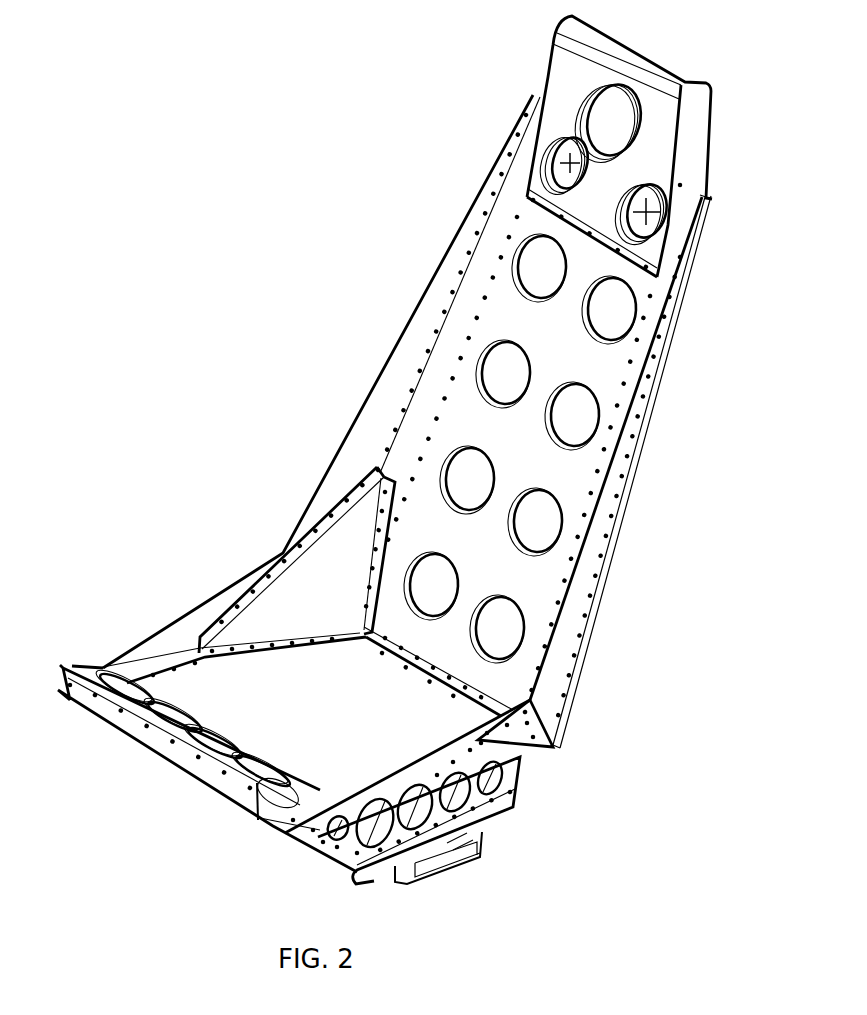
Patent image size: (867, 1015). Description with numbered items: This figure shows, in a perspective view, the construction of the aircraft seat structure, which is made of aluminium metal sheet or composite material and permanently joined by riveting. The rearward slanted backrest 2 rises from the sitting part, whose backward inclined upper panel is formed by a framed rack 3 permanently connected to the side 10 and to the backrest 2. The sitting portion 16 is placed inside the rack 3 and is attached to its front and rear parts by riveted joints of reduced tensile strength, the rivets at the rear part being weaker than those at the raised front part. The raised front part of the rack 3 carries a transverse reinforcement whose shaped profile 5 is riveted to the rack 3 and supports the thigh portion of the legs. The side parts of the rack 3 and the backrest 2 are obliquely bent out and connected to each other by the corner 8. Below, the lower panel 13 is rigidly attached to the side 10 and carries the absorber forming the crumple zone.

The backrest 2 is at (546, 79).
The framed rack 3 is at (183, 652).
The shaped profile 5 is at (96, 668).
The corner 8 is at (280, 590).
The side 10 is at (537, 772).
The lower panel 13 is at (482, 848).
The sitting portion 16 is at (250, 692).